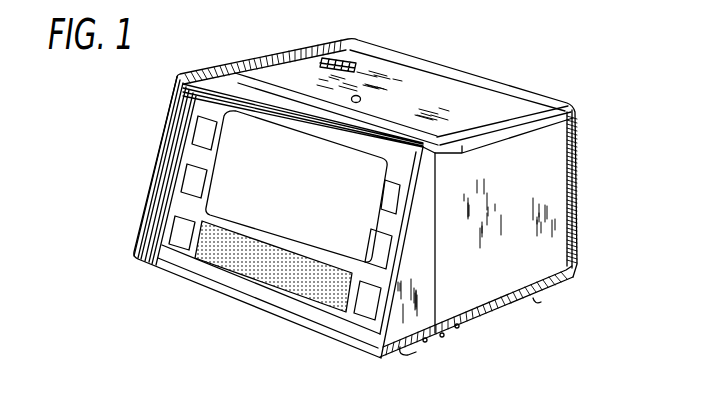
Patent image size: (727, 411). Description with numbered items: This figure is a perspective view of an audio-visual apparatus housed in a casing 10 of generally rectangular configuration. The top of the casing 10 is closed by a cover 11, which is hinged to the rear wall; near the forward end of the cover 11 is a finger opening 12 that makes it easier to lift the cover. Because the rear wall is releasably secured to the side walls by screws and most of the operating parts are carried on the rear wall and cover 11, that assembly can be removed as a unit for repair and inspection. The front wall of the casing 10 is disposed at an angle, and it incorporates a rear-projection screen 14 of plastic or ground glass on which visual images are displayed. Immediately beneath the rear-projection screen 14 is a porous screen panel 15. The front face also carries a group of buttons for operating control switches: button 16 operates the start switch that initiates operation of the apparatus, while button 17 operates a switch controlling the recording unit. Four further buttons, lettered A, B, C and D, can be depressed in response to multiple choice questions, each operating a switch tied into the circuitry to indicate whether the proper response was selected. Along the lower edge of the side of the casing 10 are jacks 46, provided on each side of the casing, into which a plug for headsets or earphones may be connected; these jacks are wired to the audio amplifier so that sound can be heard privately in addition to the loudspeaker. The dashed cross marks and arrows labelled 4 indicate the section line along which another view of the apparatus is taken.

The section line 4- 4 is at (605, 57).
The casing 10 is at (576, 218).
The cover 11 is at (428, 78).
The finger opening 12 is at (359, 95).
The rear-projection screen 14 is at (241, 137).
The porous screen panel 15 is at (290, 281).
The button 16 is at (362, 309).
The button 17 is at (180, 233).
The jacks 46 is at (457, 330).